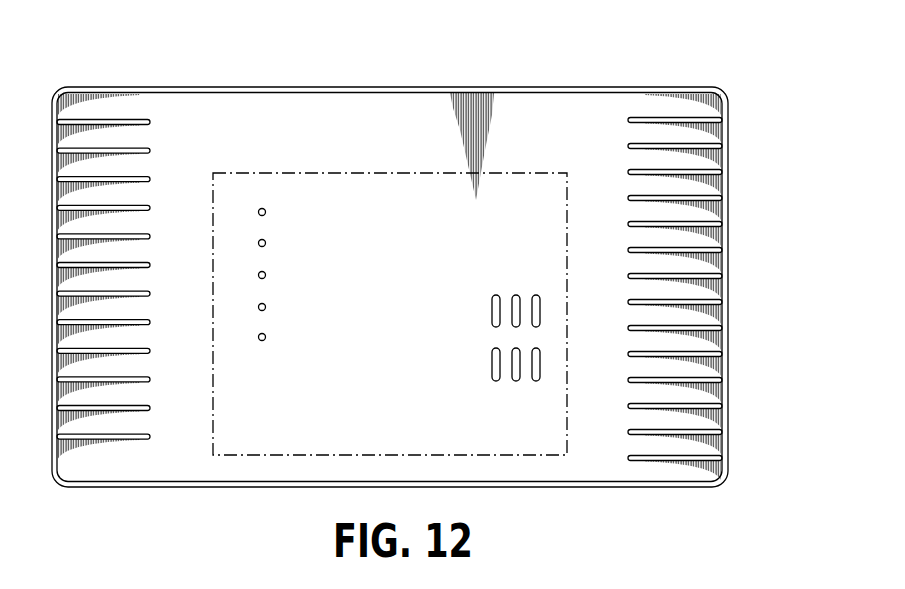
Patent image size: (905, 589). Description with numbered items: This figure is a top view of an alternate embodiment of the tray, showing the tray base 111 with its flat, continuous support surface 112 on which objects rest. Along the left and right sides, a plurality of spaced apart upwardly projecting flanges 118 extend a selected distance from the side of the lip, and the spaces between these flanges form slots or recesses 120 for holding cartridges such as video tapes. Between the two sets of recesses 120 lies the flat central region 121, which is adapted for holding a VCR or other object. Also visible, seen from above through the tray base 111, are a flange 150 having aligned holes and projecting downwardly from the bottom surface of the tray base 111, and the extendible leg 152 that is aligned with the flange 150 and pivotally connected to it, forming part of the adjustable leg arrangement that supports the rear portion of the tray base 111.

The tray base 111 is at (639, 74).
The support surface 112 is at (418, 147).
The flanges 118 is at (690, 178).
The slots 120 is at (700, 135).
The central region 121 is at (417, 274).
The flange 150 is at (540, 358).
The extendible leg 152 is at (258, 209).